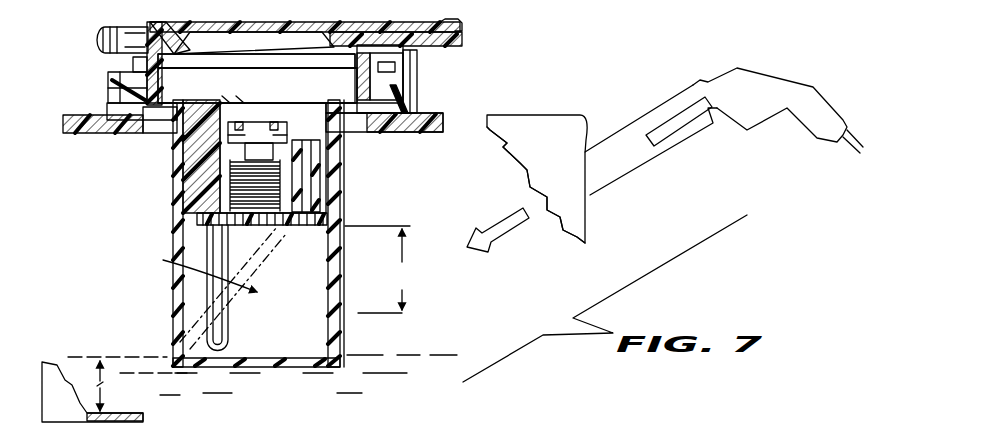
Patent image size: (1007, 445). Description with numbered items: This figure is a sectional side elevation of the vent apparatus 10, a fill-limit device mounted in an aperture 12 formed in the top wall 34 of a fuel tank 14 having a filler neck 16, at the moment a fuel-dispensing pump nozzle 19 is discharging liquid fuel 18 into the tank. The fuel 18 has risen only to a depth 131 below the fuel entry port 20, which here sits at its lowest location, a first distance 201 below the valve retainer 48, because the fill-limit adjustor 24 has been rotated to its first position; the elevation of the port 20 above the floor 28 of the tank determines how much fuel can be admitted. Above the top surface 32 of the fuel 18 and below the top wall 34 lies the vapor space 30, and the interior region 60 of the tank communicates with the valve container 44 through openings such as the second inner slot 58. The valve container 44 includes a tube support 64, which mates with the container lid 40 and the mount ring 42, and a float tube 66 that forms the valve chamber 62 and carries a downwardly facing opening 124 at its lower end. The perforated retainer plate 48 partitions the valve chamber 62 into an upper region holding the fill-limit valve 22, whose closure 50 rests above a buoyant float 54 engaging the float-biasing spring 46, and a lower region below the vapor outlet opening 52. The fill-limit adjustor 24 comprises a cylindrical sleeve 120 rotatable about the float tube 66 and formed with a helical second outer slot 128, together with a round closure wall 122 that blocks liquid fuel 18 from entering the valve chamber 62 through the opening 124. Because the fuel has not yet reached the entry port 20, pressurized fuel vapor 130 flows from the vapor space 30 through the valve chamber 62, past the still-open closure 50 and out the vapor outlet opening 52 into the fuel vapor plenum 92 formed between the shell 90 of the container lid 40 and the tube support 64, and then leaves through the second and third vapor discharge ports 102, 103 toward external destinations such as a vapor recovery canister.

The vent apparatus 10 is at (433, 19).
The aperture 12 is at (363, 126).
The fuel tank 14 is at (80, 138).
The filler neck 16 is at (607, 137).
The fuel 18 is at (500, 230).
The fuel-dispensing pump nozzle 19 is at (783, 73).
The fuel entry port 20 is at (190, 267).
The fill-limit valve 22 is at (236, 115).
The fill-limit adjustor 24 is at (346, 279).
The floor 28 is at (120, 413).
The vapor space 30 is at (93, 230).
The top surface 32 is at (112, 353).
The top wall 34 is at (428, 133).
The container lid 40 is at (156, 19).
The mount ring 42 is at (414, 101).
The valve container 44 is at (169, 138).
The float-biasing spring 46 is at (232, 163).
The valve retainer 48 is at (326, 213).
The closure 50 is at (299, 113).
The vapor outlet opening 52 is at (280, 116).
The buoyant float 54 is at (320, 177).
The second inner slot 58 is at (228, 320).
The interior region 60 is at (493, 176).
The valve chamber 62 is at (268, 348).
The tube support 64 is at (137, 71).
The float tube 66 is at (328, 342).
The shell 90 is at (322, 19).
The fuel vapor plenum 92 is at (225, 48).
The second vapor discharge port 102 is at (88, 33).
The third vapor discharge port 103 is at (463, 48).
The cylindrical sleeve 120 is at (343, 323).
The closure wall 122 is at (313, 367).
The downwardly facing opening 124 is at (200, 353).
The second outer slot 128 is at (173, 307).
The pressurized fuel vapor 130 is at (72, 44).
The depth 131 is at (98, 377).
The first distance 201 is at (383, 269).